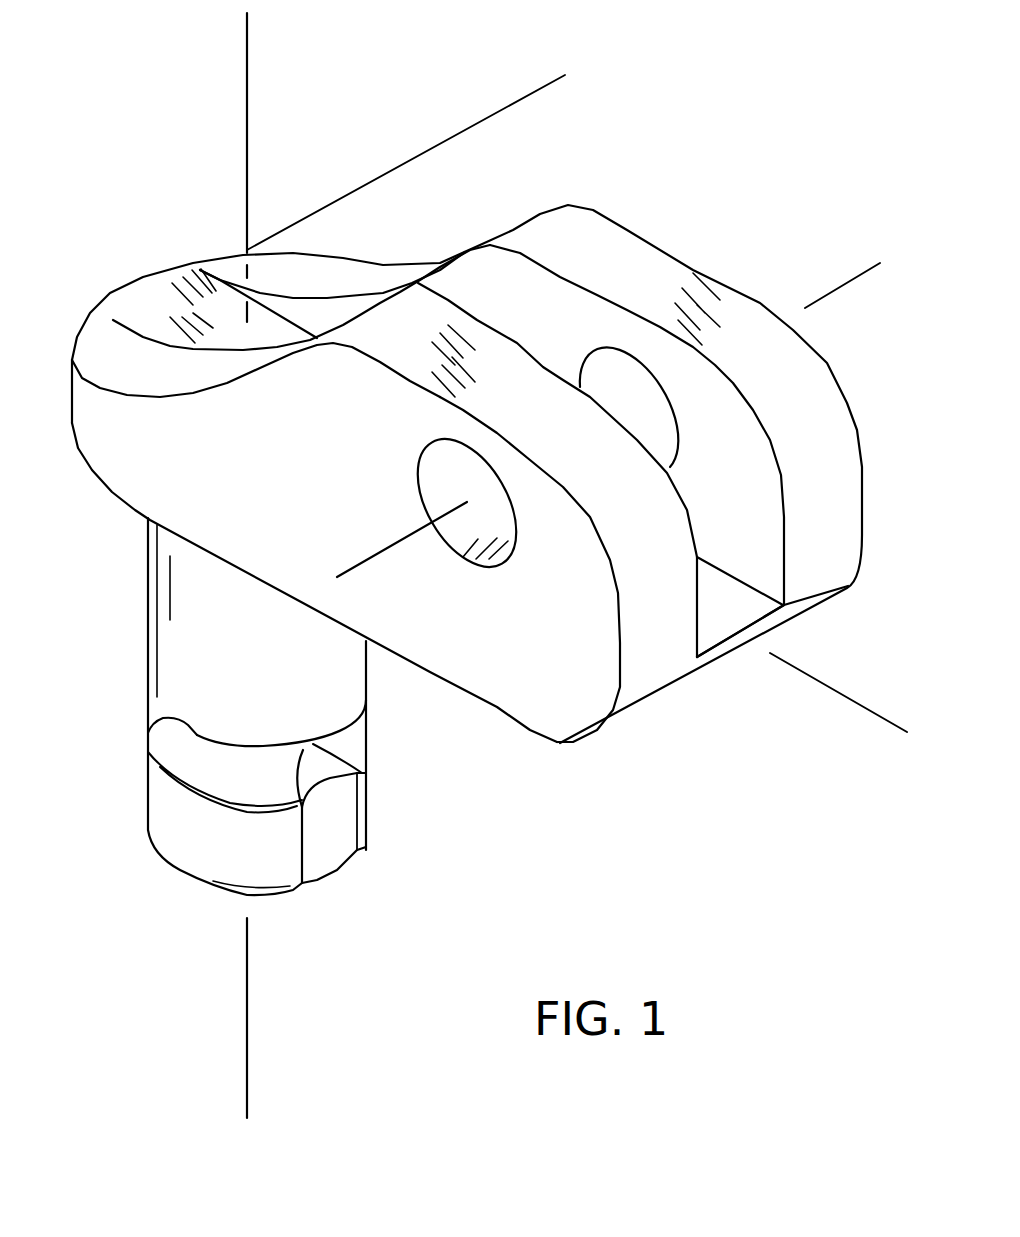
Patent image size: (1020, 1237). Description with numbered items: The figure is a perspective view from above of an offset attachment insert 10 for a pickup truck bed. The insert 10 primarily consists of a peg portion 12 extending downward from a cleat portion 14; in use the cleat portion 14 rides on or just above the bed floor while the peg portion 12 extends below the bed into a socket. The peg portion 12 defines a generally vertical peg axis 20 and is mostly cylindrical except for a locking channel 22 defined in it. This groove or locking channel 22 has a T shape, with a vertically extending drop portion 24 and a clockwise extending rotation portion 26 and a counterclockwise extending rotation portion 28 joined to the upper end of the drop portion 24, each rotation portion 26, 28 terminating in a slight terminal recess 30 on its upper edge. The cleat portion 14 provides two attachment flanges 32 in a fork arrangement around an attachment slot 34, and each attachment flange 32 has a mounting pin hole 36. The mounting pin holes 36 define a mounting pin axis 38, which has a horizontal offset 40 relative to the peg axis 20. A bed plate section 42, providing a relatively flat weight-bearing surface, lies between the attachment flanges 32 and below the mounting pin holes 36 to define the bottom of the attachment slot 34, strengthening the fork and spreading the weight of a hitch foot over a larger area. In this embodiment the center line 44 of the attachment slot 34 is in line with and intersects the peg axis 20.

The offset attachment insert 10 is at (109, 227).
The peg portion 12 is at (178, 675).
The cleat portion 14 is at (793, 363).
The peg axis 20 is at (247, 180).
The locking channel 22 is at (281, 798).
The drop portion 24 is at (340, 830).
The clockwise extending rotation portion 26 is at (195, 772).
The counterclockwise extending rotation portion 28 is at (350, 757).
The terminal recess 30 is at (148, 733).
The attachment flange 32 is at (822, 425).
The attachment slot 34 is at (757, 543).
The mounting pin hole 36 is at (635, 393).
The mounting pin axis 38 is at (857, 273).
The horizontal offset 40 is at (520, 100).
The bed plate section 42 is at (720, 620).
The center line 44 is at (827, 690).